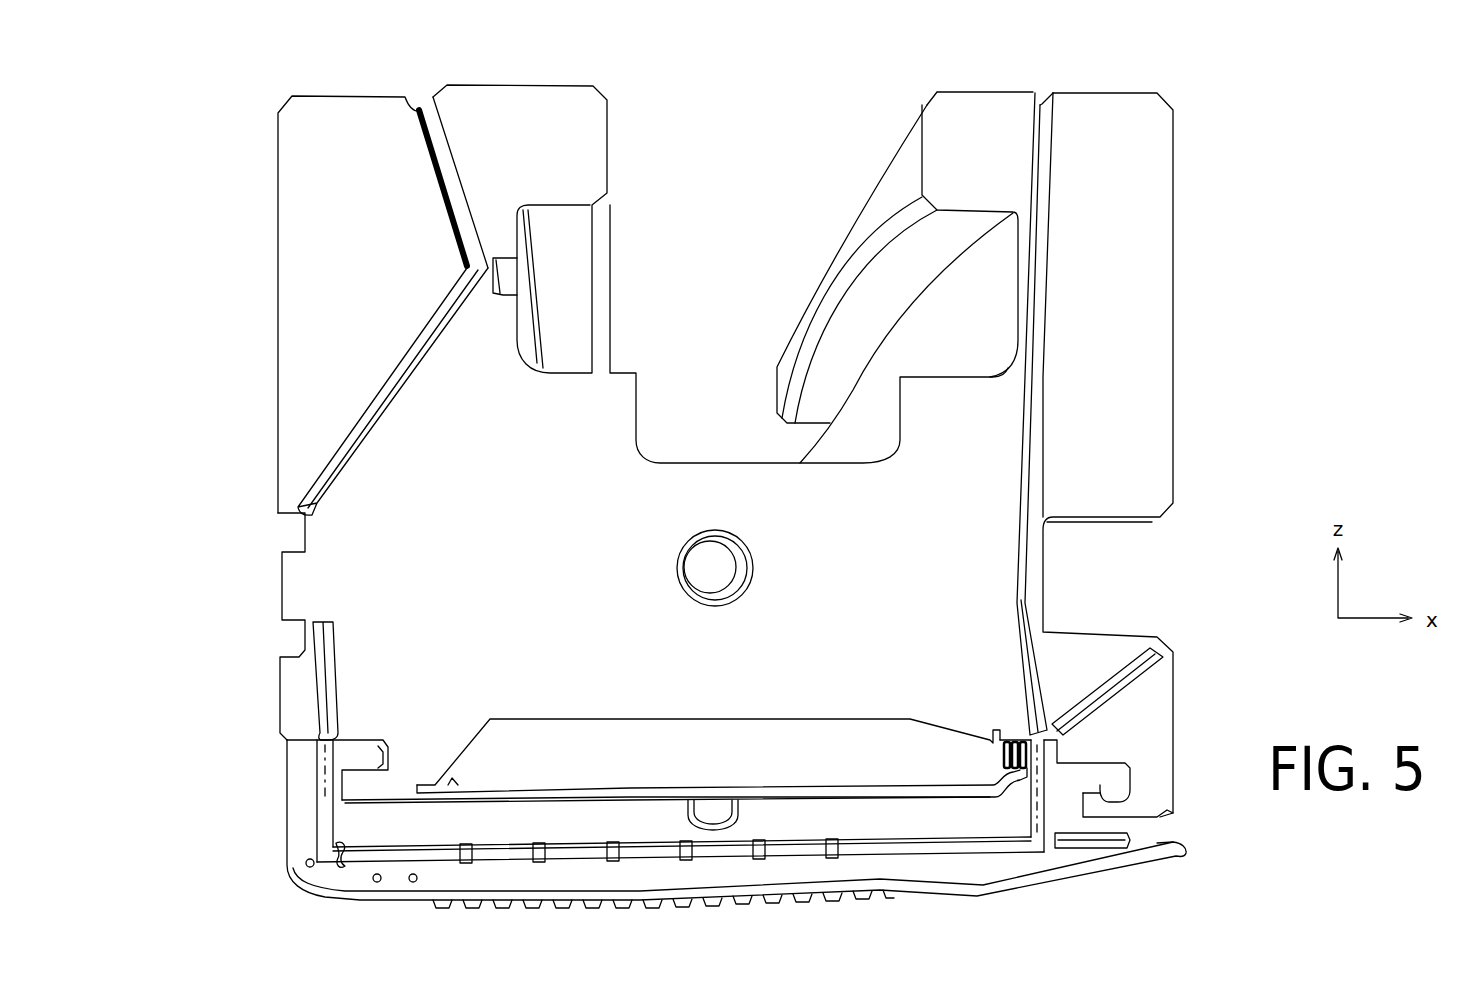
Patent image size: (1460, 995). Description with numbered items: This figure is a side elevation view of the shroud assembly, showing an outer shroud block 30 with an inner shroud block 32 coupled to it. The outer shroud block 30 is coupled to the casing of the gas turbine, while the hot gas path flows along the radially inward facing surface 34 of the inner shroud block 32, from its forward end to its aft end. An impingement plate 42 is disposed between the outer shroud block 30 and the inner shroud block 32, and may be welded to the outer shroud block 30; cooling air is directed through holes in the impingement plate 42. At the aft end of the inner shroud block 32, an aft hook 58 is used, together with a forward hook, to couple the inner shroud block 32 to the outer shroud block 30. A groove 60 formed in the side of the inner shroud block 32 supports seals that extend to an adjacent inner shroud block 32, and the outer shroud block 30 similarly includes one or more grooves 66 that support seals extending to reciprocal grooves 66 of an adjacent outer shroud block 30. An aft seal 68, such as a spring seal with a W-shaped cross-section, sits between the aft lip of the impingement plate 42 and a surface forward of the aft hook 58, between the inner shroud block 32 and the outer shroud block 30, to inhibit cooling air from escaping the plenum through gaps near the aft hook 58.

The outer shroud block 30 is at (1152, 112).
The inner shroud block 32 is at (1013, 870).
The inward facing surface 34 is at (949, 912).
The impingement plate 42 is at (697, 745).
The aft hook 58 is at (1100, 787).
The groove 60 is at (323, 807).
The grooves 66 is at (330, 682).
The aft seal 68 is at (1010, 737).